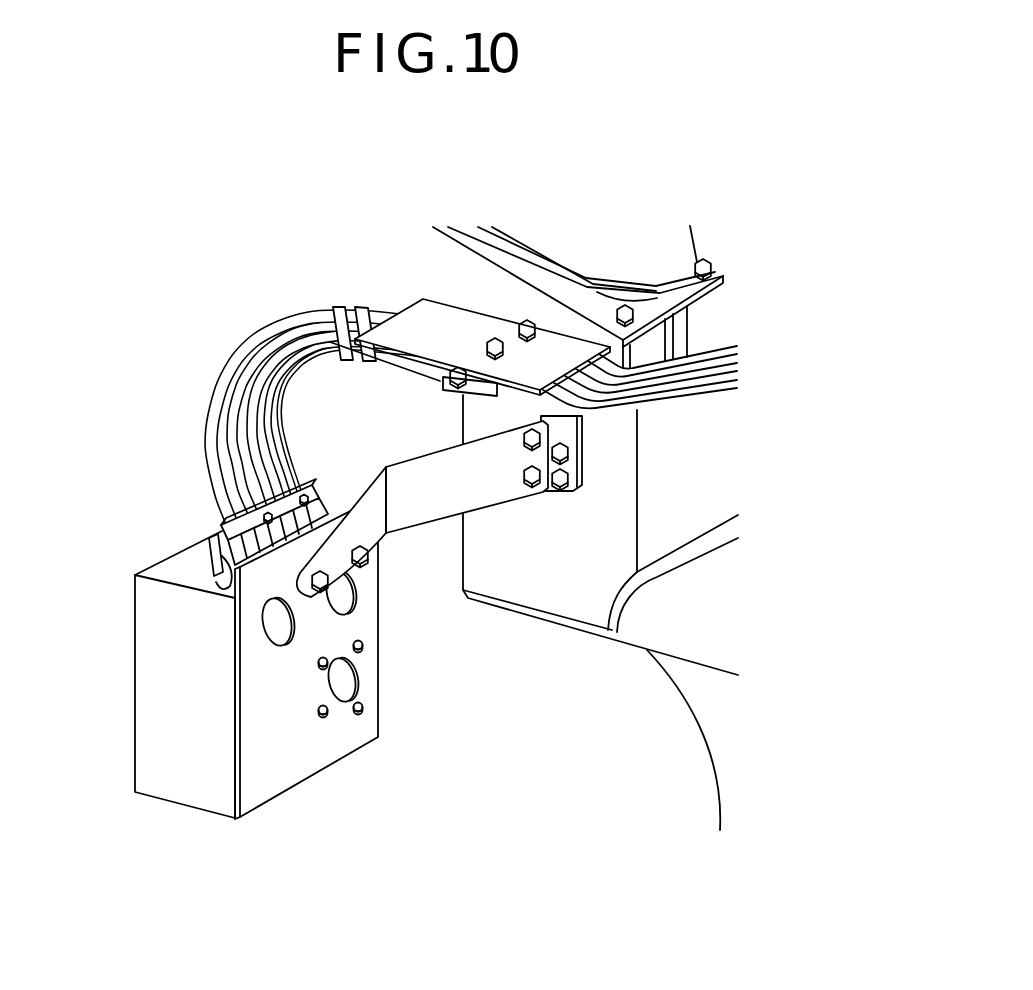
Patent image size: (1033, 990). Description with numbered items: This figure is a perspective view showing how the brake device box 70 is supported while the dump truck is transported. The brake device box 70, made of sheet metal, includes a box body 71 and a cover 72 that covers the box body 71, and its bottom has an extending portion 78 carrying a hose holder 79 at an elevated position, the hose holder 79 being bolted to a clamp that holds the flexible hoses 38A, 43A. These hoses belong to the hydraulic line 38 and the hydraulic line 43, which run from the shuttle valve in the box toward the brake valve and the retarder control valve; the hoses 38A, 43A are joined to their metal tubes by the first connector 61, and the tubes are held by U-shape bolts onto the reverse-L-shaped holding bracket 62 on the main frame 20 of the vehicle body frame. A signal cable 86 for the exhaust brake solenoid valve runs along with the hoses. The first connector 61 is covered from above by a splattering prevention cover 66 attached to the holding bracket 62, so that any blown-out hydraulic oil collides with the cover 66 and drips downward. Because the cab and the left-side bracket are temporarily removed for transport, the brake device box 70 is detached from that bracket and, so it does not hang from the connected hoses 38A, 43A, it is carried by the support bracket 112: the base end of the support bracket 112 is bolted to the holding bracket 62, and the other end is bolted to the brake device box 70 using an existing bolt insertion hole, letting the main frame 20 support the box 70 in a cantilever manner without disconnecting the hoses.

The main frame 20 is at (558, 592).
The hydraulic line 38 is at (705, 358).
The flexible hose 38A is at (358, 306).
The hydraulic line 43 is at (702, 388).
The flexible hose 43A is at (205, 412).
The first connector 61 is at (349, 372).
The holding bracket 62 is at (565, 432).
The splattering prevention cover 66 is at (430, 315).
The brake device box 70 is at (200, 683).
The box body 71 is at (306, 764).
The cover 72 is at (182, 794).
The extending portion 78 is at (245, 576).
The hose holder 79 is at (223, 531).
The signal cable 86 is at (290, 418).
The support bracket 112 is at (484, 484).